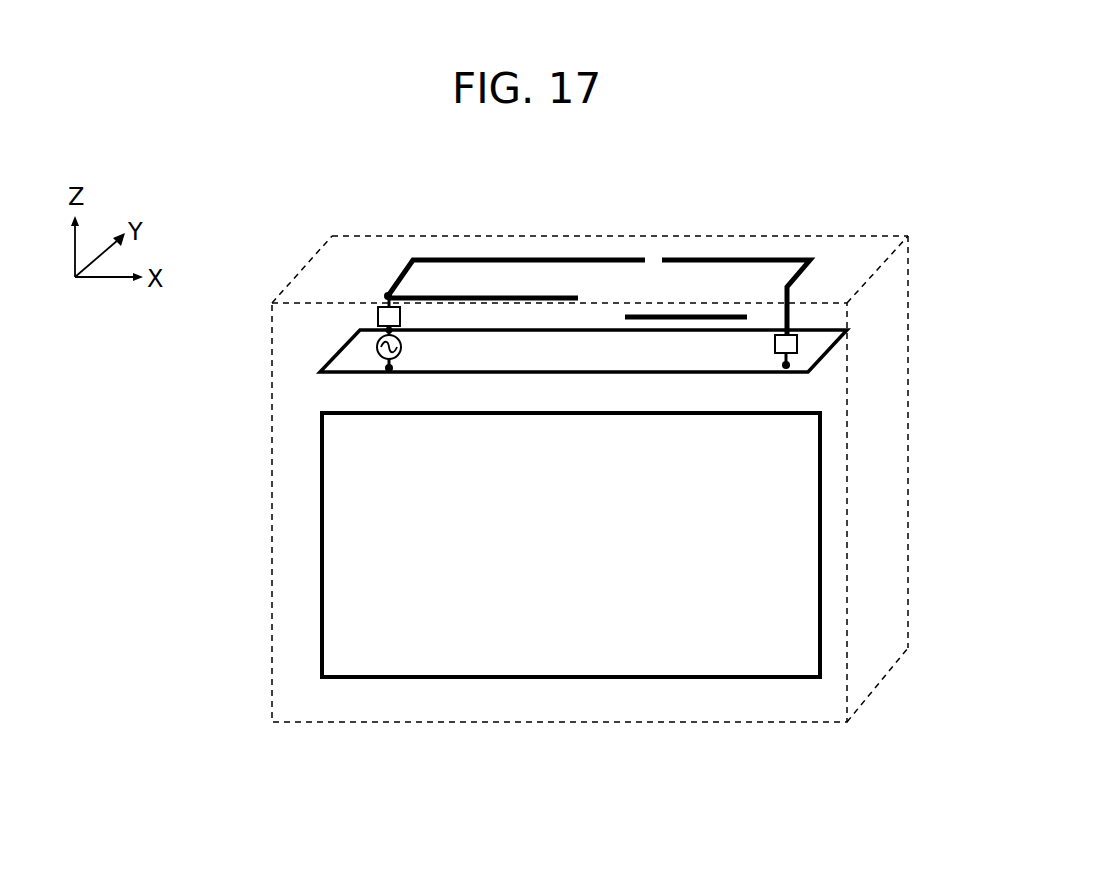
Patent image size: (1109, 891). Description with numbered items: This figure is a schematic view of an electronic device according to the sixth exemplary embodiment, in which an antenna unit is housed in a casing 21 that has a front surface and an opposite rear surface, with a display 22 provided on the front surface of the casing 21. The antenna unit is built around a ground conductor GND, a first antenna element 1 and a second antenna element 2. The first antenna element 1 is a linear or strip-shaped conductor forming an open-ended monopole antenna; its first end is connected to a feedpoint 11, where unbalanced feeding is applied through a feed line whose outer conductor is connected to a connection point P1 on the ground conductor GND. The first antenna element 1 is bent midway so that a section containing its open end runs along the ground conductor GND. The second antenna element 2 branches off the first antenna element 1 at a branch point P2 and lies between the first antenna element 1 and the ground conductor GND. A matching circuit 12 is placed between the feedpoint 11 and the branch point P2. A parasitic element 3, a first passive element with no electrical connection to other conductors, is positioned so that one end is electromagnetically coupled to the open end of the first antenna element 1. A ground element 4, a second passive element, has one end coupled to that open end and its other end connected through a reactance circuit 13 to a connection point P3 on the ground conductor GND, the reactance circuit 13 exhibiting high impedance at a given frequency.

The first antenna element 1 is at (428, 260).
The second antenna element 2 is at (538, 297).
The parasitic element 3 is at (702, 317).
The ground element 4 is at (768, 260).
The feedpoint 11 is at (376, 347).
The matching circuit 12 is at (378, 315).
The reactance circuit 13 is at (797, 340).
The casing 21 is at (885, 518).
The display 22 is at (788, 612).
The connection point P1 is at (388, 368).
The branch point P2 is at (386, 294).
The connection point P3 is at (786, 365).
The ground conductor GND is at (813, 352).